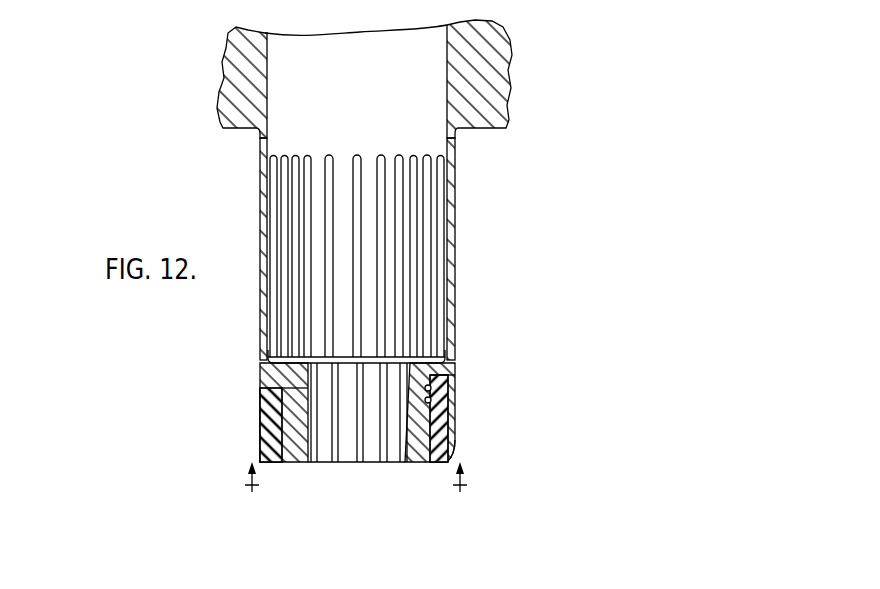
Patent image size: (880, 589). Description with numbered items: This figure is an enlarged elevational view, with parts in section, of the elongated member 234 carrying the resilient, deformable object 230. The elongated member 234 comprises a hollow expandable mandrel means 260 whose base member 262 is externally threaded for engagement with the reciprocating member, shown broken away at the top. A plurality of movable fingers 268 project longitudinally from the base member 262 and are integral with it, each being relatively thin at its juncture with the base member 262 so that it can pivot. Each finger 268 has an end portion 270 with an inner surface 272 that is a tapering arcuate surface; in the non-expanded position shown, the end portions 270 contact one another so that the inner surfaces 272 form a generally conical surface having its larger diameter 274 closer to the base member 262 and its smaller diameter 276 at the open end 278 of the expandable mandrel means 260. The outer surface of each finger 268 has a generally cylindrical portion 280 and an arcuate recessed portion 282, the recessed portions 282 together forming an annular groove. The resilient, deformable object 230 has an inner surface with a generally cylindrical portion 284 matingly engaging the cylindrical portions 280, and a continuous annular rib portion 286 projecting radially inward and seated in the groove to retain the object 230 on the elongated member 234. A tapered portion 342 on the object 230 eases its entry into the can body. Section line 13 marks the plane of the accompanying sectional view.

The section line 13- 13 is at (357, 495).
The resilient, deformable object 230 is at (268, 413).
The elongated member 234 is at (502, 113).
The expandable mandrel means 260 is at (170, 330).
The base member 262 is at (245, 127).
The movable fingers 268 is at (338, 315).
The end portion 270 is at (352, 462).
The inner surface 272 is at (395, 463).
The larger diameter 274 is at (295, 381).
The smaller diameter 276 is at (270, 462).
The open end 278 is at (406, 479).
The generally cylindrical portion 280 is at (298, 463).
The recessed portion 282 is at (433, 401).
The generally cylindrical portion 284 is at (277, 440).
The annular rib portion 286 is at (432, 386).
The tapered portion 342 is at (467, 458).